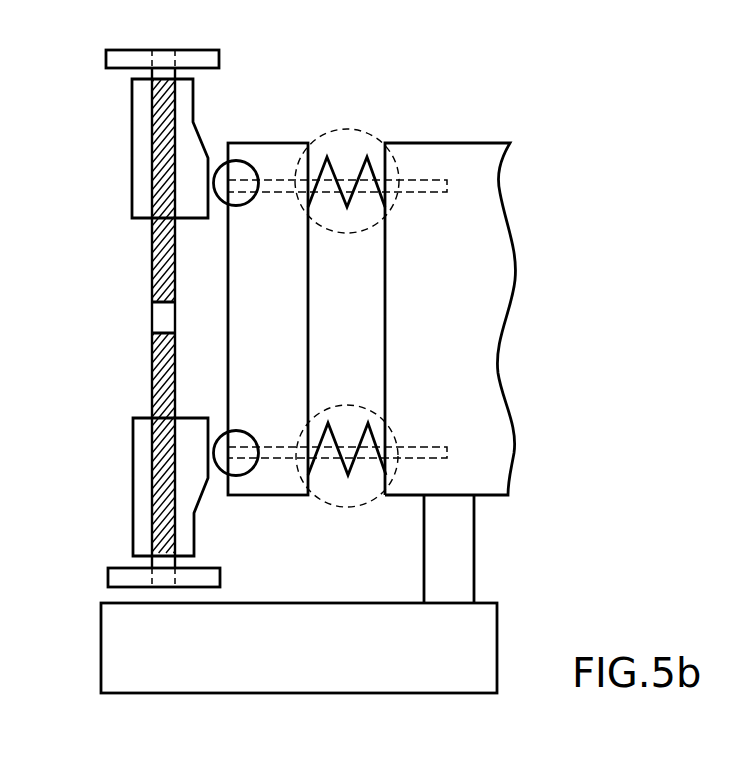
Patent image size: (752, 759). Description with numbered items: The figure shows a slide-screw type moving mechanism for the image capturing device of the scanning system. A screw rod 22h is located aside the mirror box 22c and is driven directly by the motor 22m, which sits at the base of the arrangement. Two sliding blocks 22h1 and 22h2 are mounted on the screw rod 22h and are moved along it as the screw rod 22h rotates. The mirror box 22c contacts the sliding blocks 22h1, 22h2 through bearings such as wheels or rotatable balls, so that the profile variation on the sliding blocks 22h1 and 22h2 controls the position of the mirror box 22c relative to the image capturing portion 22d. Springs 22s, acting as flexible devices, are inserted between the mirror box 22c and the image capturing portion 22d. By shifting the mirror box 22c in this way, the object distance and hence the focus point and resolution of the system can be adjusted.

The motor 22m is at (110, 646).
The screw rod 22h is at (152, 320).
The sliding block 22h1 is at (132, 152).
The sliding block 22h2 is at (133, 491).
The mirror box 22c is at (267, 143).
The spring 22s is at (345, 128).
The image capturing portion 22d is at (447, 143).